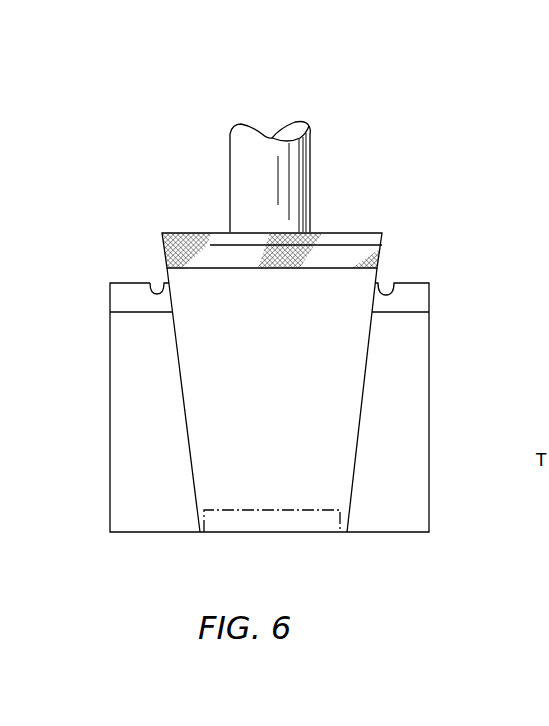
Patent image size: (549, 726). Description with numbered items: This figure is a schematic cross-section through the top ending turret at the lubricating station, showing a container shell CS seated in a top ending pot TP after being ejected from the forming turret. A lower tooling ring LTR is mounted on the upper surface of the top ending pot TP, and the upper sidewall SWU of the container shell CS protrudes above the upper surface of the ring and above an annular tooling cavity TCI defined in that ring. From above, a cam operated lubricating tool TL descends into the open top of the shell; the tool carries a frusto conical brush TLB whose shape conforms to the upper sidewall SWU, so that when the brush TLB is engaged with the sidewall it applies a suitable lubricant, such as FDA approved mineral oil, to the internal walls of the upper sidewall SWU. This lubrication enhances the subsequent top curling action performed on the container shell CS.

The lubricating tool TL is at (213, 213).
The frusto conical brush TLB is at (163, 246).
The lower tooling ring LTR is at (127, 303).
The upper sidewall SWU is at (250, 246).
The annular tooling cavity TCI is at (395, 290).
The container shell CS is at (353, 444).
The top ending pot TP is at (414, 487).